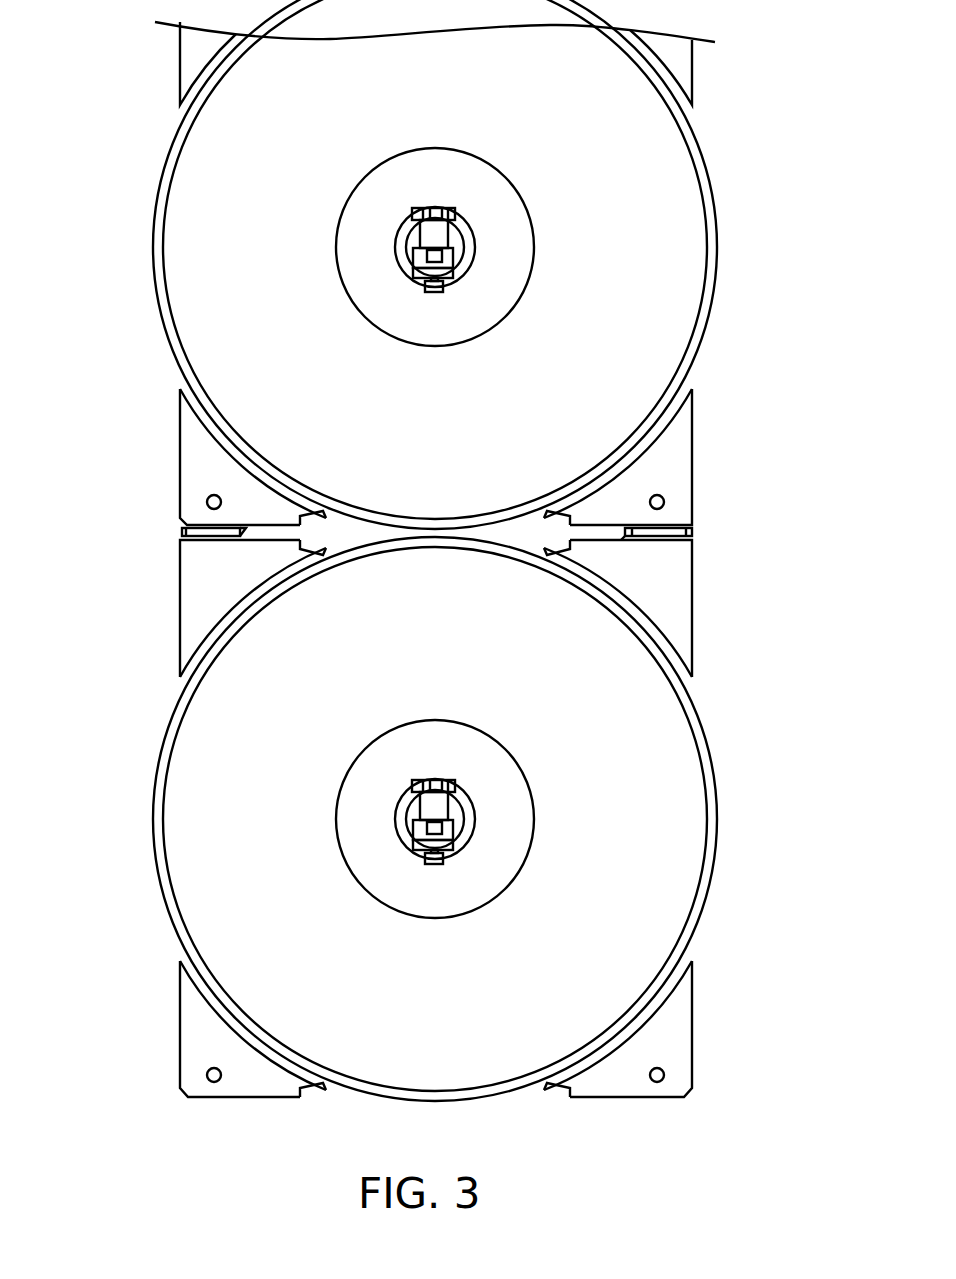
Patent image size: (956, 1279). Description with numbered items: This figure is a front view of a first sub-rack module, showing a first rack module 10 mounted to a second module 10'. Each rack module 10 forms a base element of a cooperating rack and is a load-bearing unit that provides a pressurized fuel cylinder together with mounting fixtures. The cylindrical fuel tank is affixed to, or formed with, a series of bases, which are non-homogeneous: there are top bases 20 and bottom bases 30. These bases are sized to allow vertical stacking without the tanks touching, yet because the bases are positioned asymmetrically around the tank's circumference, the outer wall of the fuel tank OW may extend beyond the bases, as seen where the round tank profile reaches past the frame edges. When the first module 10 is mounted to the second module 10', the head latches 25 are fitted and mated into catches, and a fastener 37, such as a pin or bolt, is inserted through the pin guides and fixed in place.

The rack module 10 is at (431, 819).
The second module 10' is at (489, 264).
The top bases 20 is at (443, 559).
The head latches 25 is at (692, 528).
The bottom bases 30 is at (180, 472).
The fastener 37 is at (665, 502).
The outer wall of the fuel tank OW is at (153, 788).